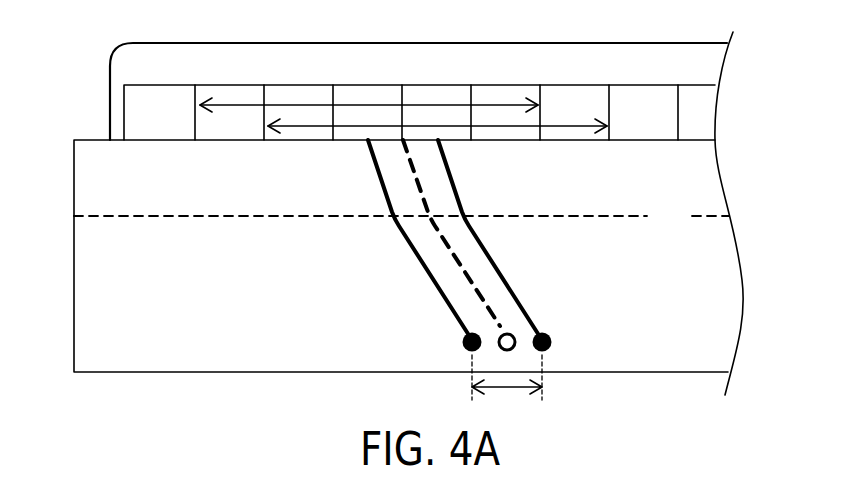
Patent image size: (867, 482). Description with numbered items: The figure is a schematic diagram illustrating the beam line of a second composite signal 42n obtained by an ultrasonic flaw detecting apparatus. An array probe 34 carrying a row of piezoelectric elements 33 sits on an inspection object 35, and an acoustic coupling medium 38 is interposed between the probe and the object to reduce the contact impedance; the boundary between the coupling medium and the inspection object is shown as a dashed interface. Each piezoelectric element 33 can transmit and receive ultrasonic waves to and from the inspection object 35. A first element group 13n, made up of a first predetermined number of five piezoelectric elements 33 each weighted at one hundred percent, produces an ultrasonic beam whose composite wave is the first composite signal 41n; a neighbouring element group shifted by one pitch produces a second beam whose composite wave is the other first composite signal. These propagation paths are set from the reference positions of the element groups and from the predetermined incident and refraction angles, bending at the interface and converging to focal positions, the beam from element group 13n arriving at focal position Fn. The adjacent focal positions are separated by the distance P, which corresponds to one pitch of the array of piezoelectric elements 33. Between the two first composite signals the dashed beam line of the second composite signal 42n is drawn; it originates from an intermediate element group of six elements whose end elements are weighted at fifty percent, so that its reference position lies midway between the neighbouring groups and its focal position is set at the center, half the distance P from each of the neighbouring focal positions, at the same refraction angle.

The array probe 34 is at (110, 62).
The acoustic coupling medium 38 is at (74, 173).
The inspection object 35 is at (74, 257).
The piezoelectric element 33 is at (645, 141).
The element group 13n is at (241, 100).
The first composite signal 41n is at (402, 230).
The second composite signal 42n is at (462, 268).
The focal position Fn is at (462, 338).
The distance for one pitch P is at (507, 392).